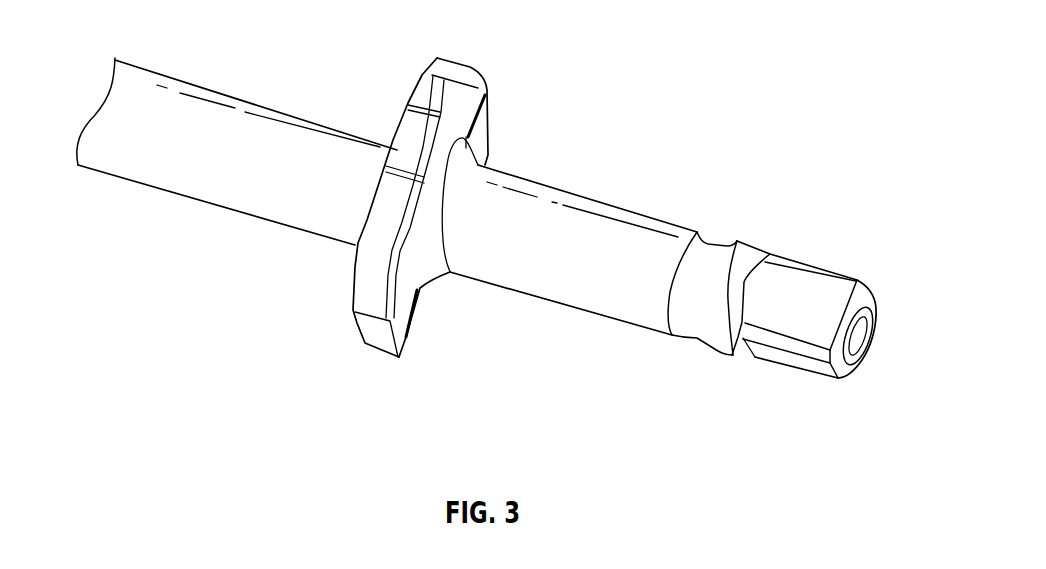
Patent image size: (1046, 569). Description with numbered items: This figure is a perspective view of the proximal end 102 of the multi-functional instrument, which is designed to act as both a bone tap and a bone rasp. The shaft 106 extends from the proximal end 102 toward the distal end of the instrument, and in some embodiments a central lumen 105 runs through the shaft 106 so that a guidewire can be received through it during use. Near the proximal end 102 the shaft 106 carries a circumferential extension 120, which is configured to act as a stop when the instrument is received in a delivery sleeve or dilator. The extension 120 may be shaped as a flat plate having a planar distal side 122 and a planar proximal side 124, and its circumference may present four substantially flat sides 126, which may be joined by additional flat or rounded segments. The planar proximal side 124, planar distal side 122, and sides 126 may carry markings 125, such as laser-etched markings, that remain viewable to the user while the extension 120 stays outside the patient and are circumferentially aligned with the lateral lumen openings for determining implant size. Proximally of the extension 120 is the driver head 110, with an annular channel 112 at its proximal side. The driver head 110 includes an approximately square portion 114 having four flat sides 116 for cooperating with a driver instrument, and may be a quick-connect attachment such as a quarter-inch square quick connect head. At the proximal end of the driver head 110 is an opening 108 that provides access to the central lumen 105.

The proximal end 102 is at (672, 127).
The central lumen 105 is at (880, 347).
The shaft 106 is at (198, 118).
The opening 108 is at (860, 328).
The driver head 110 is at (713, 440).
The annular channel 112 is at (688, 316).
The square portion 114 is at (798, 382).
The flat sides 116 is at (805, 295).
The circumferential extension 120 is at (350, 396).
The planar distal side 122 is at (364, 289).
The planar proximal side 124 is at (410, 336).
The markings 125 is at (476, 112).
The flat sides 126 is at (402, 162).